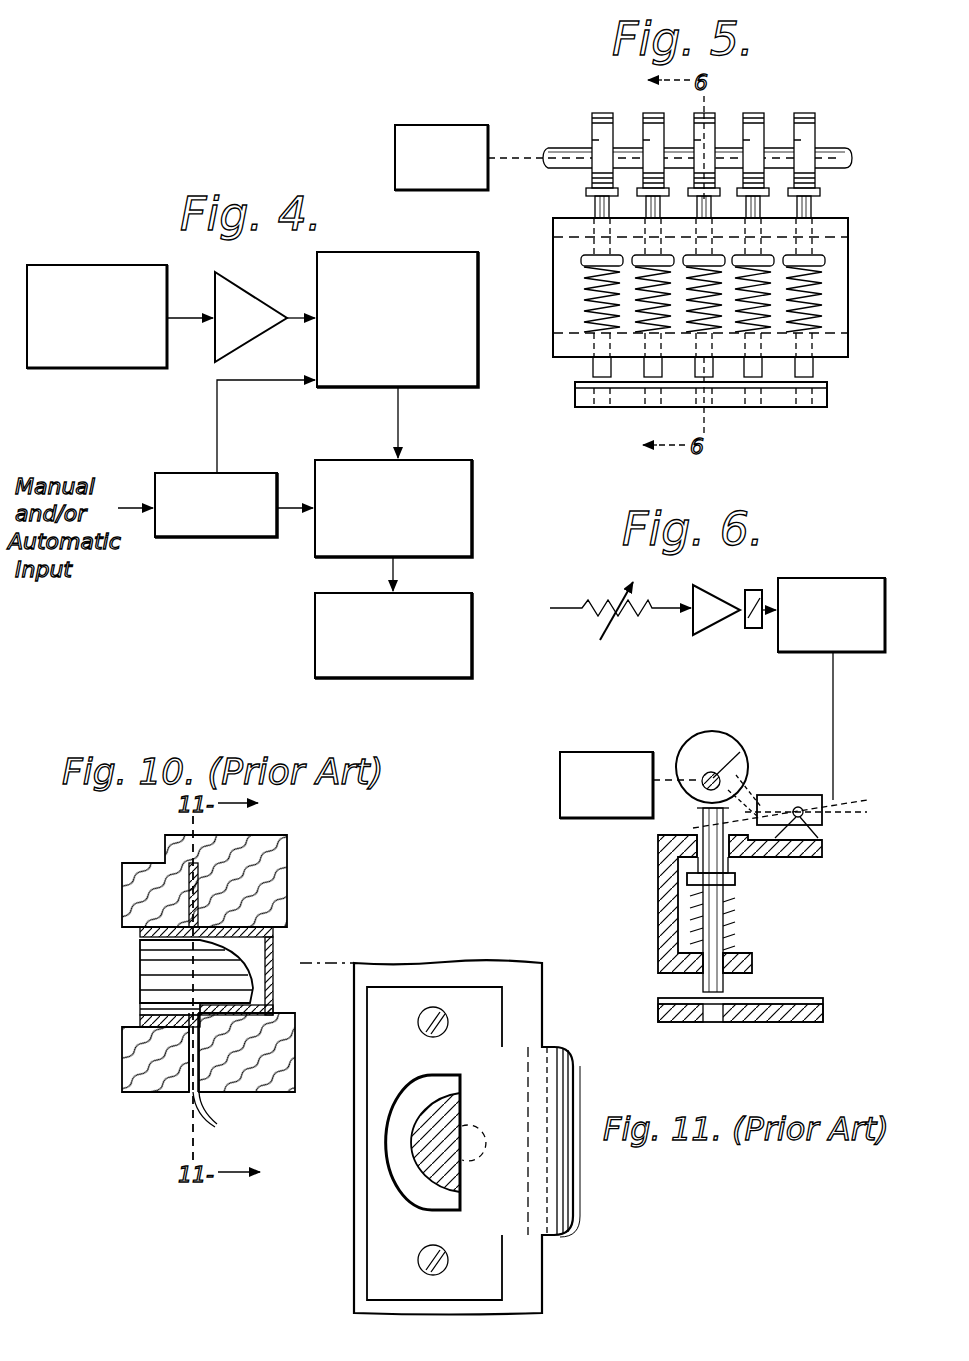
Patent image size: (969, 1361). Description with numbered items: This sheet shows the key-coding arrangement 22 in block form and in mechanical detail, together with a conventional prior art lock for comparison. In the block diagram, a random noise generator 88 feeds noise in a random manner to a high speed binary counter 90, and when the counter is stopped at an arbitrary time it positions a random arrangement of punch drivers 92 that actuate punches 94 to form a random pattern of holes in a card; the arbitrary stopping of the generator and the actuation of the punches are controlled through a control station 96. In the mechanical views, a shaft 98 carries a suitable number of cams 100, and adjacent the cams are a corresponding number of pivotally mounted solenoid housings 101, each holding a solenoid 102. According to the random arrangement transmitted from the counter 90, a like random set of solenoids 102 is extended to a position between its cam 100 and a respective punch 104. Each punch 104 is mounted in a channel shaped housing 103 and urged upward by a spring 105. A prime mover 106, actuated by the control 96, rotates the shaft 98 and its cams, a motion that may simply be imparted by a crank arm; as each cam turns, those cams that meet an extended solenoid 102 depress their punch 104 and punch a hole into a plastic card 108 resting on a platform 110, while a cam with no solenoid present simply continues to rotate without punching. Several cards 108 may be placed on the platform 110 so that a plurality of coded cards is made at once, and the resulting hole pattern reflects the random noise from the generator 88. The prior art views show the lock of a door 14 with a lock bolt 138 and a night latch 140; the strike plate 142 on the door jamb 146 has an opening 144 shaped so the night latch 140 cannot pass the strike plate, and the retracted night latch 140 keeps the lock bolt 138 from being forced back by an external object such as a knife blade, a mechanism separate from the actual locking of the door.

In FIG. 10, the door 14 is at (160, 1092).
In FIG. 4, the arrangement for manufacturing coded cards 22 is at (186, 382).
In FIG. 6, the arrangement for manufacturing coded cards 22 is at (647, 728).
In FIG. 4, the random noise generator 88 is at (142, 270).
In FIG. 6, the random noise generator 88 is at (645, 620).
In FIG. 4, the high speed binary counter 90 is at (470, 336).
In FIG. 6, the high speed binary counter 90 is at (868, 577).
In FIG. 4, the punch drivers 92 is at (460, 505).
In FIG. 4, the punches 94 is at (450, 656).
In FIG. 4, the control station 96 is at (258, 538).
In FIG. 5, the shaft 98 is at (830, 150).
In FIG. 6, the shaft 98 is at (740, 752).
In FIG. 5, the cams 100 is at (800, 118).
In FIG. 6, the cams 100 is at (705, 748).
In FIG. 6, the solenoid housing 101 is at (805, 805).
In FIG. 5, the solenoid 102 is at (800, 204).
In FIG. 6, the solenoid 102 is at (757, 792).
In FIG. 5, the channel shaped housing 103 is at (570, 335).
In FIG. 6, the channel shaped housing 103 is at (665, 922).
In FIG. 5, the punch 104 is at (600, 207).
In FIG. 6, the punch 104 is at (697, 837).
In FIG. 5, the spring 105 is at (830, 330).
In FIG. 6, the spring 105 is at (740, 928).
In FIG. 5, the prime mover 106 is at (478, 130).
In FIG. 6, the prime mover 106 is at (600, 750).
In FIG. 5, the plastic card 108 is at (822, 383).
In FIG. 6, the plastic card 108 is at (665, 1000).
In FIG. 5, the platform 110 is at (818, 400).
In FIG. 6, the platform 110 is at (658, 1012).
In FIG. 10, the lock bolt 138 is at (140, 968).
In FIG. 11, the lock bolt 138 is at (432, 1155).
In FIG. 10, the night latch 140 is at (142, 1016).
In FIG. 11, the night latch 140 is at (480, 1160).
In FIG. 10, the strike plate 142 is at (290, 906).
In FIG. 11, the strike plate 142 is at (480, 1272).
In FIG. 10, the opening 144 is at (278, 957).
In FIG. 11, the opening 144 is at (447, 1085).
In FIG. 10, the door jamb 146 is at (260, 1092).
In FIG. 11, the door jamb 146 is at (522, 963).